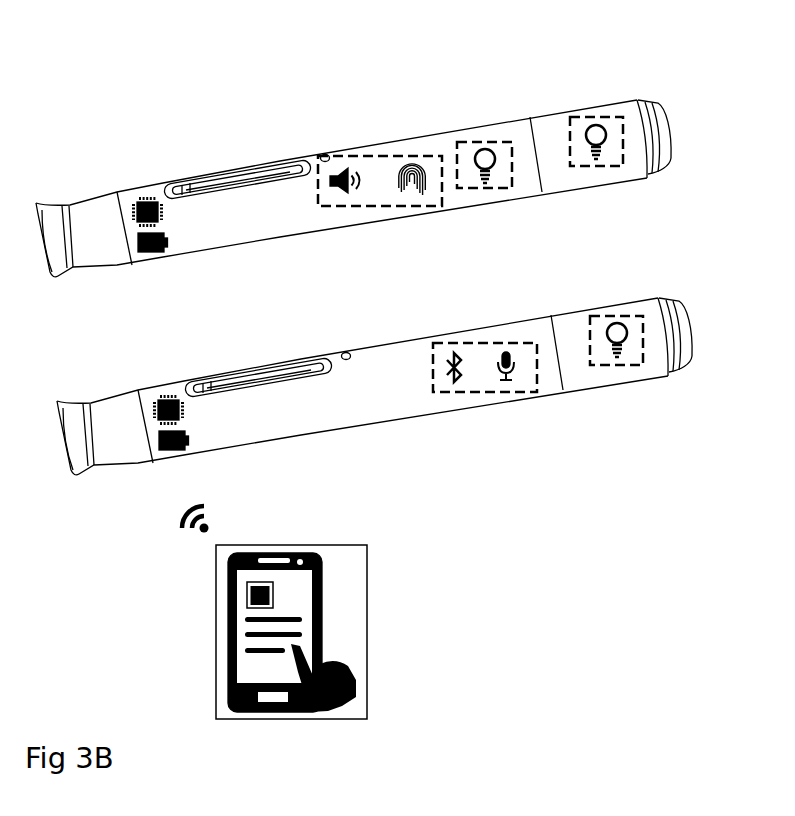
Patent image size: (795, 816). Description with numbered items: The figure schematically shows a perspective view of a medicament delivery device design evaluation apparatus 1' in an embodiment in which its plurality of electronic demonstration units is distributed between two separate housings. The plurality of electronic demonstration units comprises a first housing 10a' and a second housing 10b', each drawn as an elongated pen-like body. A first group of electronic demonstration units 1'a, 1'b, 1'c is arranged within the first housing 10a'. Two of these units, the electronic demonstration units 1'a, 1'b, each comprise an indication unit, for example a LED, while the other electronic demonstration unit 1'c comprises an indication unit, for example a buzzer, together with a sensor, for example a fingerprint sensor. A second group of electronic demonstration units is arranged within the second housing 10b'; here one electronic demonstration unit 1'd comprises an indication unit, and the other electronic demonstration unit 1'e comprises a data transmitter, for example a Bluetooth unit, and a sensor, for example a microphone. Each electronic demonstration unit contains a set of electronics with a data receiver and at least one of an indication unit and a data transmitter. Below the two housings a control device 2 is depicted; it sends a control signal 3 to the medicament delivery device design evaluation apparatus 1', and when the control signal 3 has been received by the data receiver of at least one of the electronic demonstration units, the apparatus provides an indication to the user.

The medicament delivery device design evaluation apparatus 1' is at (397, 265).
The first housing 10a' is at (353, 166).
The second housing 10b' is at (379, 366).
The electronic demonstration unit 1'a is at (619, 110).
The electronic demonstration unit 1'b is at (512, 135).
The electronic demonstration unit 1'c is at (398, 149).
The electronic demonstration unit 1'd is at (646, 311).
The electronic demonstration unit 1'e is at (505, 331).
The control device 2 is at (367, 578).
The control signal 3 is at (180, 529).